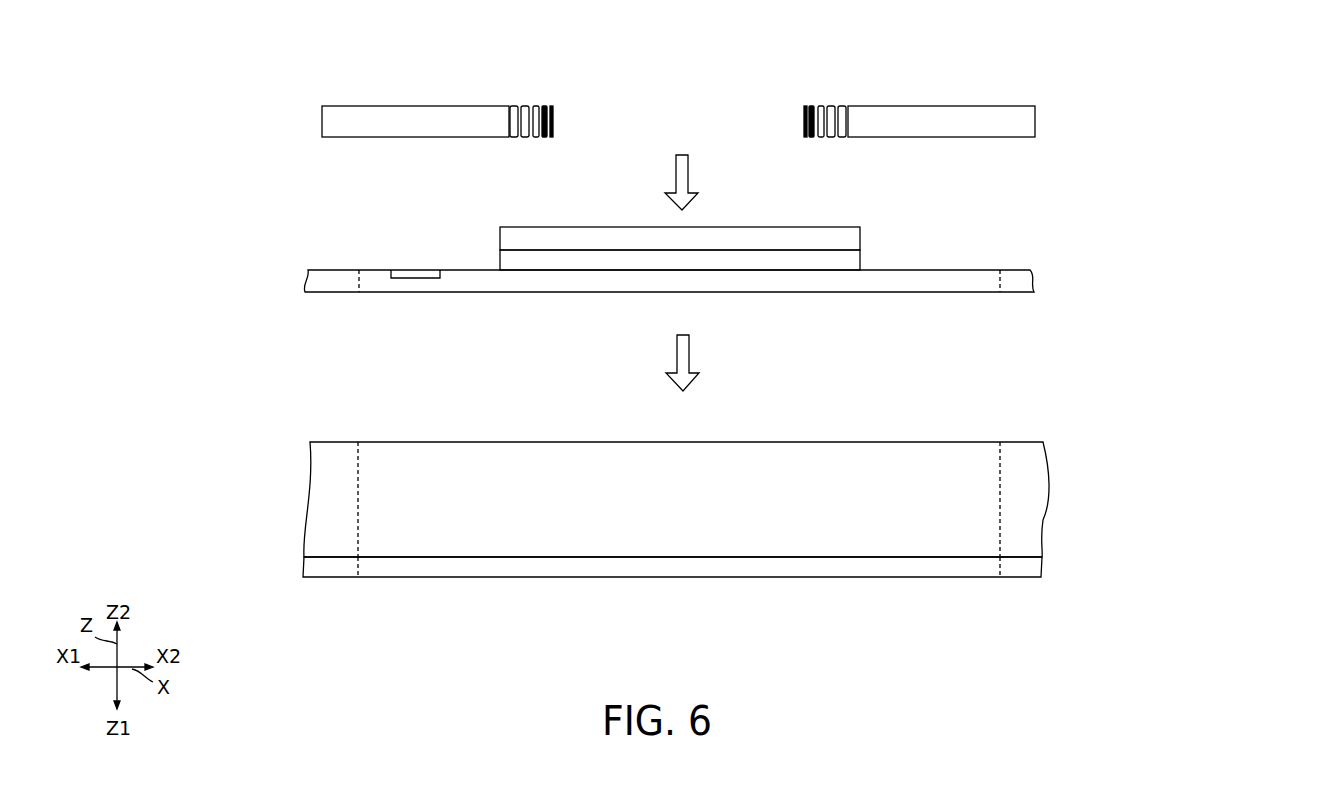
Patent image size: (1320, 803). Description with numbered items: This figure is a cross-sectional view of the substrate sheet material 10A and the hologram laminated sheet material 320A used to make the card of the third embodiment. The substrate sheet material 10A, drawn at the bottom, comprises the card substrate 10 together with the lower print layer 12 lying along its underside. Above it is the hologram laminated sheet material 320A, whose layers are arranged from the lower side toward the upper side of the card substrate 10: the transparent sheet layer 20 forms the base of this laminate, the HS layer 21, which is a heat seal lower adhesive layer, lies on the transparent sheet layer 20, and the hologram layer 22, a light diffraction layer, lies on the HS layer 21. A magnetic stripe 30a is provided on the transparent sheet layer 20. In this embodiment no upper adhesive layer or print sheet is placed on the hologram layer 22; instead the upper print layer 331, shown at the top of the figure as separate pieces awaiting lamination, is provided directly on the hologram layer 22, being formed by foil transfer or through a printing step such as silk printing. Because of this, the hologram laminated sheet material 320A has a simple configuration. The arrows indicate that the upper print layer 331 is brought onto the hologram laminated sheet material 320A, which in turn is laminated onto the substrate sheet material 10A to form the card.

The upper print layer 331 is at (330, 108).
The hologram laminated sheet material 320A is at (667, 273).
The hologram layer 22 is at (862, 236).
The HS layer 21 is at (860, 259).
The transparent sheet layer 20 is at (960, 284).
The magnetic stripe 30a is at (400, 279).
The substrate sheet material 10A is at (680, 510).
The card substrate 10 is at (968, 502).
The lower print layer 12 is at (962, 564).